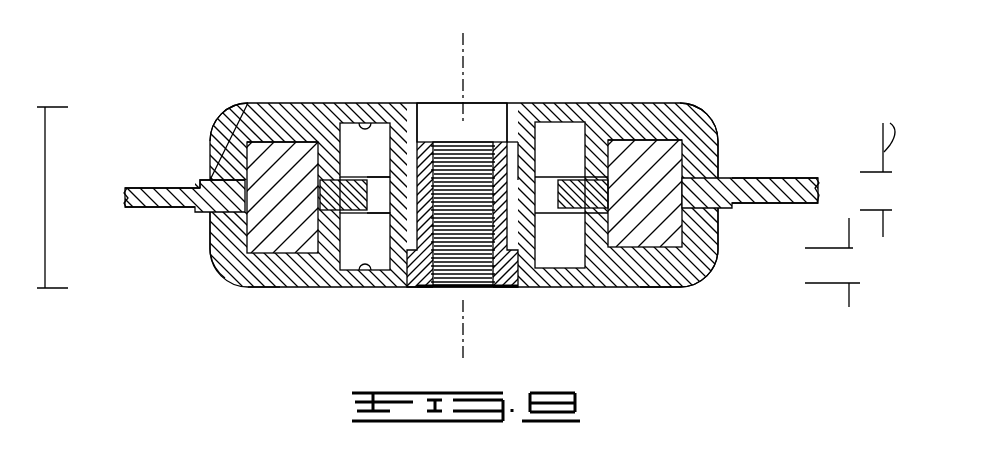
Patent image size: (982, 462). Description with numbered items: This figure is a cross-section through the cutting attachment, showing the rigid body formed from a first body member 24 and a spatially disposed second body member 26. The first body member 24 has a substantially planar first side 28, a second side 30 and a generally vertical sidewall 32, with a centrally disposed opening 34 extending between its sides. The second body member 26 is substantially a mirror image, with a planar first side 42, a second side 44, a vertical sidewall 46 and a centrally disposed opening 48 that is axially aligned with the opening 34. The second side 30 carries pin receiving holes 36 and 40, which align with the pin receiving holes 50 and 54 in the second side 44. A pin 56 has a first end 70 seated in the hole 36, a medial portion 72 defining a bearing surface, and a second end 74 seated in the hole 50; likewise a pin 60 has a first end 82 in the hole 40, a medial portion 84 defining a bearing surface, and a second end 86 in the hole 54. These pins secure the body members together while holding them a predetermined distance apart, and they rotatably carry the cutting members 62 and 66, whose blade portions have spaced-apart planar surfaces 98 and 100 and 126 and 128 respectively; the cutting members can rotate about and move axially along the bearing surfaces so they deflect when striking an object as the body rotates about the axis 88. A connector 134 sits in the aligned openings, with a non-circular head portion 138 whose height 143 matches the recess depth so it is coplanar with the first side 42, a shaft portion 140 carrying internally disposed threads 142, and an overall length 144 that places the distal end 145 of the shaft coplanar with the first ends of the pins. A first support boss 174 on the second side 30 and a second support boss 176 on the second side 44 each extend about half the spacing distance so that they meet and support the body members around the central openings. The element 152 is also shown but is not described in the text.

The first body member 24 is at (712, 102).
The second body member 26 is at (715, 275).
The first side of first body member 28 is at (593, 143).
The second side of first body member 30 is at (360, 124).
The sidewall of first body member 32 is at (718, 155).
The centrally disposed opening of first body member 34 is at (433, 135).
The pin receiving hole 36 is at (232, 118).
The pin receiving hole 40 is at (676, 152).
The first side of second body member 42 is at (336, 287).
The second side of second body member 44 is at (362, 262).
The sidewall of second body member 46 is at (210, 236).
The centrally disposed opening of second body member 48 is at (515, 266).
The pin receiving hole 50 is at (213, 262).
The pin receiving hole 54 is at (678, 237).
The pin 56 is at (255, 168).
The pin 60 is at (672, 262).
The cutting member 62 is at (118, 208).
The cutting member 66 is at (783, 175).
The first end of pin 70 is at (280, 143).
The medial portion of pin 72 is at (333, 280).
The second end of pin 74 is at (247, 287).
The first end of pin 82 is at (656, 143).
The medial portion of pin 84 is at (607, 147).
The second end of pin 86 is at (655, 222).
The axis 88 is at (466, 33).
The first planar surface of blade portion 98 is at (140, 186).
The second planar surface of blade portion 100 is at (148, 208).
The first planar surface of blade portion 126 is at (790, 178).
The second planar surface of blade portion 128 is at (750, 203).
The connector 134 is at (427, 288).
The non-circular head portion 138 is at (520, 262).
The shaft portion 140 is at (513, 147).
The internally disposed threads 142 is at (445, 135).
The height of head portion 143 is at (849, 300).
The length of connector 144 is at (52, 158).
The distal end of shaft 145 is at (493, 140).
The left arm spacer 152 is at (218, 185).
The first support boss 174 is at (532, 143).
The second support boss 176 is at (535, 232).